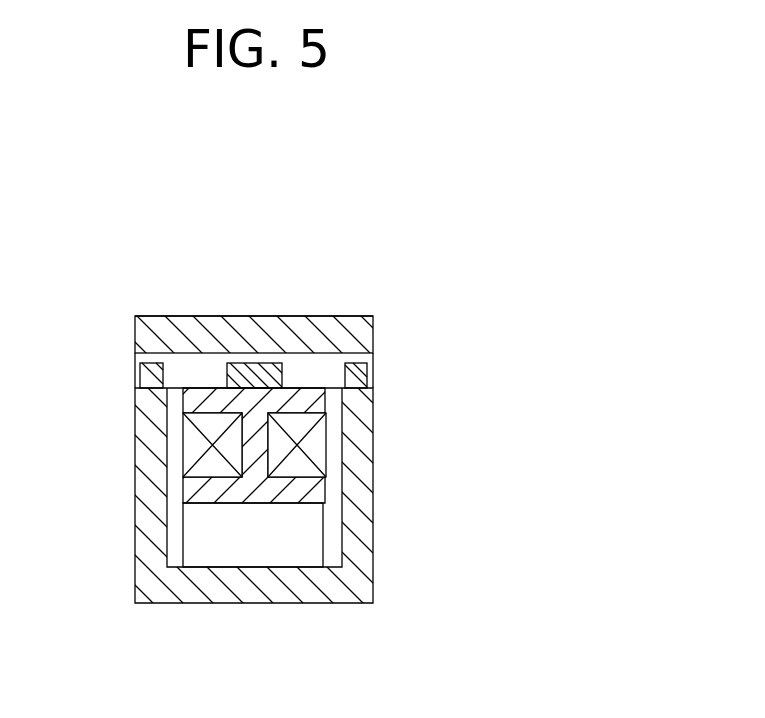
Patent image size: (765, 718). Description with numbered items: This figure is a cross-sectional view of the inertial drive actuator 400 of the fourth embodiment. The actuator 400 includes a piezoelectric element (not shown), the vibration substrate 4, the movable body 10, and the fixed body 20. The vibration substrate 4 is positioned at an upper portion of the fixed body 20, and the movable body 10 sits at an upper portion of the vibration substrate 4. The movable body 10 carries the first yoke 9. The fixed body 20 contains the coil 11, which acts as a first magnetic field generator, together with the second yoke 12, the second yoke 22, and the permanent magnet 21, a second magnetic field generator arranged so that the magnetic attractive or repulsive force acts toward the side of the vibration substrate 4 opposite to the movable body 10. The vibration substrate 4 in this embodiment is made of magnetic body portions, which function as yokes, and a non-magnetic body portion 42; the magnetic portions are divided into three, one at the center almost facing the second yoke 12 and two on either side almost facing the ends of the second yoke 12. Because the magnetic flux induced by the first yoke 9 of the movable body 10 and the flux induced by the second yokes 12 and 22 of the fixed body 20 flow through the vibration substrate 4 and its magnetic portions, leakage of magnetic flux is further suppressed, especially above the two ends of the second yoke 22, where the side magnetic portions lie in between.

The inertial drive actuator 400 is at (443, 265).
The vibration substrate 4 is at (357, 238).
The first yoke 9 is at (358, 317).
The movable body 10 is at (135, 345).
The non-magnetic body portion 42 is at (373, 370).
The fixed body 20 is at (522, 517).
The coil 11 is at (328, 456).
The second yoke 12 is at (320, 500).
The permanent magnet 21 is at (323, 555).
The second yoke 22 is at (347, 603).